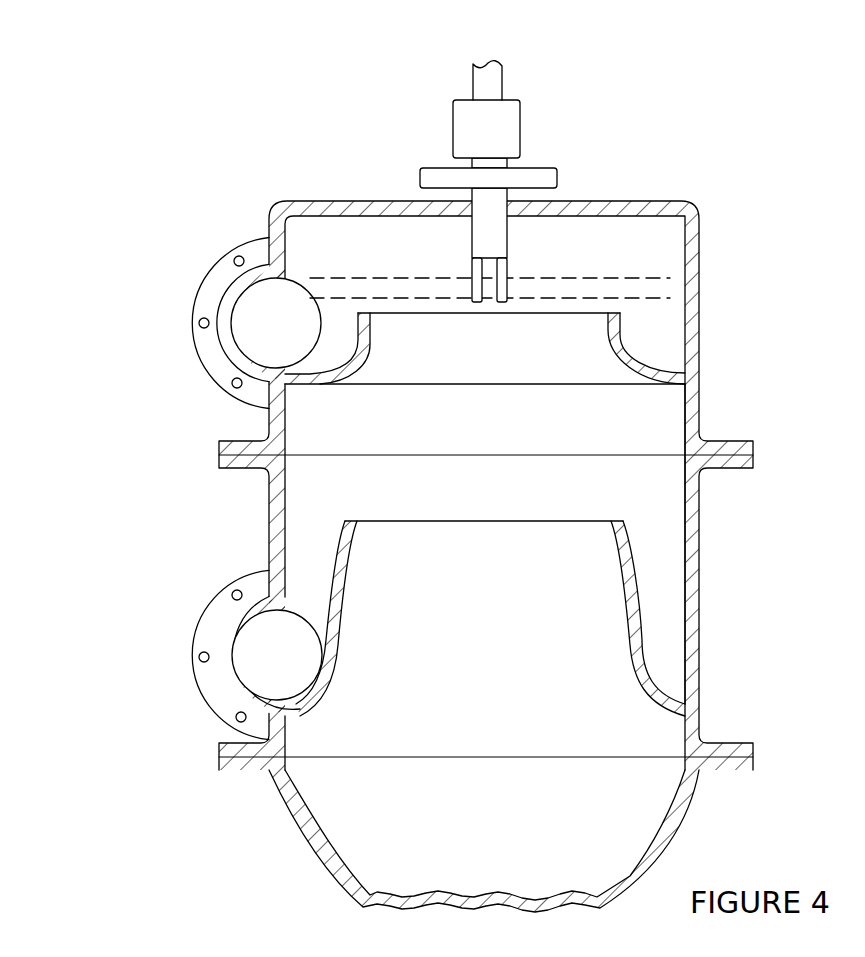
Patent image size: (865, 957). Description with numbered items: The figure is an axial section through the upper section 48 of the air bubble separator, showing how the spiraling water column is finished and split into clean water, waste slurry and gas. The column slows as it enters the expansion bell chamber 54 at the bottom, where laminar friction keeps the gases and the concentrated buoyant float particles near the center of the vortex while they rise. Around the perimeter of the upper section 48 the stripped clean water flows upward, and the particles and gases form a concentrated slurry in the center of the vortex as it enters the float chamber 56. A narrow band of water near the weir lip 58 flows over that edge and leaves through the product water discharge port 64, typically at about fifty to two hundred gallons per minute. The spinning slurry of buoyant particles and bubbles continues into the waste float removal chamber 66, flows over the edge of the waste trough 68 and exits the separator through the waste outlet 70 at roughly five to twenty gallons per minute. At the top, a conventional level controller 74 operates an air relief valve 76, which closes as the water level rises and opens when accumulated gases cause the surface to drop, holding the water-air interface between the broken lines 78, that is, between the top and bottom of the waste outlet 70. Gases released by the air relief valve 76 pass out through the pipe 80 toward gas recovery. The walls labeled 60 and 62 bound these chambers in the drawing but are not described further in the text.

The upper section 48 is at (246, 206).
The expansion bell chamber 54 is at (687, 826).
The float chamber 56 is at (470, 655).
The weir lip 58 is at (377, 520).
The lower diaphragm side walls 60 is at (663, 610).
The reservoir side wall 62 is at (682, 483).
The product water discharge port 64 is at (200, 617).
The waste float removal chamber 66 is at (472, 366).
The waste trough 68 is at (407, 313).
The waste outlet 70 is at (192, 302).
The level controller 74 is at (557, 176).
The air relief valve 76 is at (508, 122).
The broken lines 78 is at (527, 278).
The pipe 80 is at (492, 83).